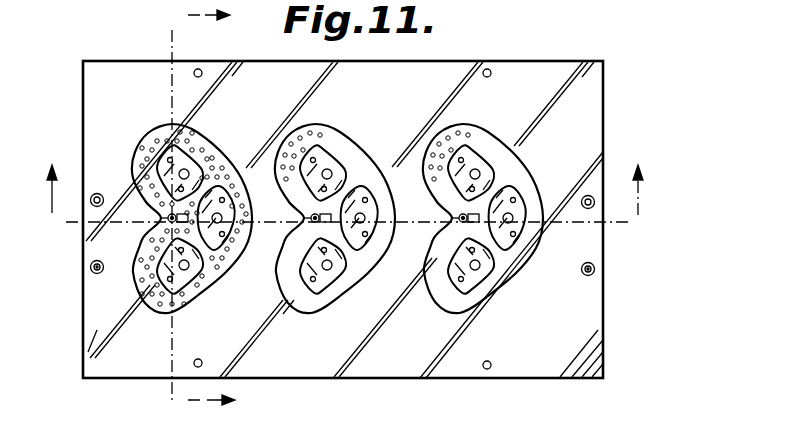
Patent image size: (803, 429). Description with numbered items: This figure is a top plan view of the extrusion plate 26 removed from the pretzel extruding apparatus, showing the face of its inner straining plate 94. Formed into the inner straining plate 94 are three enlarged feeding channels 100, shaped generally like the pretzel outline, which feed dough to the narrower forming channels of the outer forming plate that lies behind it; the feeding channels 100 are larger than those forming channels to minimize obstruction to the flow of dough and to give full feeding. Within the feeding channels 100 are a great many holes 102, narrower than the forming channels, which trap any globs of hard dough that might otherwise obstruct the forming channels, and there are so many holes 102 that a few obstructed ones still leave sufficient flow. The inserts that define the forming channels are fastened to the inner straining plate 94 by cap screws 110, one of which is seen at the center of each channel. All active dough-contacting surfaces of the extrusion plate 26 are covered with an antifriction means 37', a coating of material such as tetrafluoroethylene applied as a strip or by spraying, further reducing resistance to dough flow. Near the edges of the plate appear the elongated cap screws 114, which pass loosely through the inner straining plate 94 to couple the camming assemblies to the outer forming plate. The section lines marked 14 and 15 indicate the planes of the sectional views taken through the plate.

The extrusion plate 26 is at (605, 144).
The inner straining plate 94 is at (562, 336).
The cap screws 114 is at (91, 267).
The section line 14- 14 is at (349, 205).
The section line 15- 15 is at (191, 210).
The holes 102 is at (207, 147).
The feeding channels 100 is at (360, 156).
The antifriction means 37' is at (370, 196).
The cap screws 110 is at (310, 218).